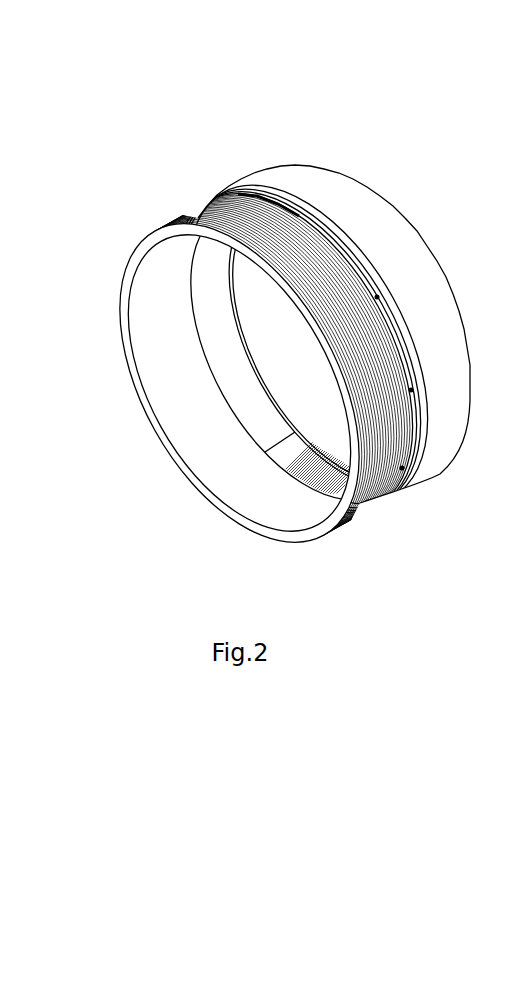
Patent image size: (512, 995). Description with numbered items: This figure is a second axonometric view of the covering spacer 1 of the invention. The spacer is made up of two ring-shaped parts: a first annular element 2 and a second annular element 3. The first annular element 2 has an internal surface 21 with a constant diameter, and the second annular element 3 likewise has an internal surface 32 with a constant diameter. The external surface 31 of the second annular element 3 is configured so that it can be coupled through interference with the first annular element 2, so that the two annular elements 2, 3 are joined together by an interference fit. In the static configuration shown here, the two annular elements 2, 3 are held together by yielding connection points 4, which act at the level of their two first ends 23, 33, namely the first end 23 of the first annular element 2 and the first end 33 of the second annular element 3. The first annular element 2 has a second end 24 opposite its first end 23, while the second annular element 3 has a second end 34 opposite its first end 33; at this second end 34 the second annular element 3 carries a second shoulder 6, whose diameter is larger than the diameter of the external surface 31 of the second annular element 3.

The covering spacer 1 is at (165, 123).
The first annular element 2 is at (312, 140).
The second annular element 3 is at (143, 213).
The yielding connection points 4 is at (412, 386).
The second shoulder 6 is at (197, 482).
The internal surface 21 is at (354, 228).
The first end 23 is at (288, 197).
The second end 24 is at (437, 262).
The external surface 31 is at (372, 533).
The internal surface 32 is at (183, 409).
The first end 33 is at (277, 198).
The second end 34 is at (198, 500).